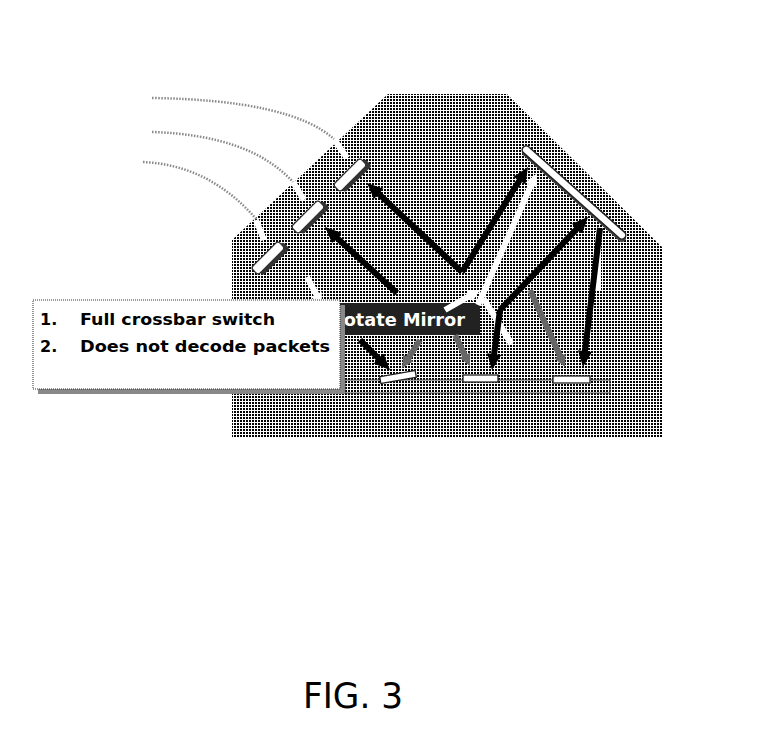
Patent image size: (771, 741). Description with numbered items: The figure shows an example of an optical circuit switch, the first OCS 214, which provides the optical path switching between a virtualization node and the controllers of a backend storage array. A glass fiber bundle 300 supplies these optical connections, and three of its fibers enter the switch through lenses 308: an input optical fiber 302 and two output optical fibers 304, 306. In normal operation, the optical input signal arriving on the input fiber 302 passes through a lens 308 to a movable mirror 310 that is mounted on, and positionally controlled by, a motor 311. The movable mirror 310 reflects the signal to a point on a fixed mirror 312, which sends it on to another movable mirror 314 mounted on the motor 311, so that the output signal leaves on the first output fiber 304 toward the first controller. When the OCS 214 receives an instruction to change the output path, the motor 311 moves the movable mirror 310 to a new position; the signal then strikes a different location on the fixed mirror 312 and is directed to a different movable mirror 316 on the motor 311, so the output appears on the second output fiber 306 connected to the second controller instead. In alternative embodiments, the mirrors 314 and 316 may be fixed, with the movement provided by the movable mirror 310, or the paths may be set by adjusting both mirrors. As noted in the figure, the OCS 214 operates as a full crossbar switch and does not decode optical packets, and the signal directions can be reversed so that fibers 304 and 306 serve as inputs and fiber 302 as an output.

The first optical circuit switch 214 is at (607, 44).
The glass fiber bundle 300 is at (191, 179).
The input optical fiber 302 is at (157, 186).
The first output optical fiber 304 is at (191, 104).
The second output optical fiber 306 is at (170, 146).
The lens 308 is at (366, 157).
The movable mirror 310 is at (383, 382).
The motor 311 is at (575, 394).
The fixed mirror 312 is at (591, 207).
The movable mirror 314 is at (590, 380).
The movable mirror 316 is at (483, 384).